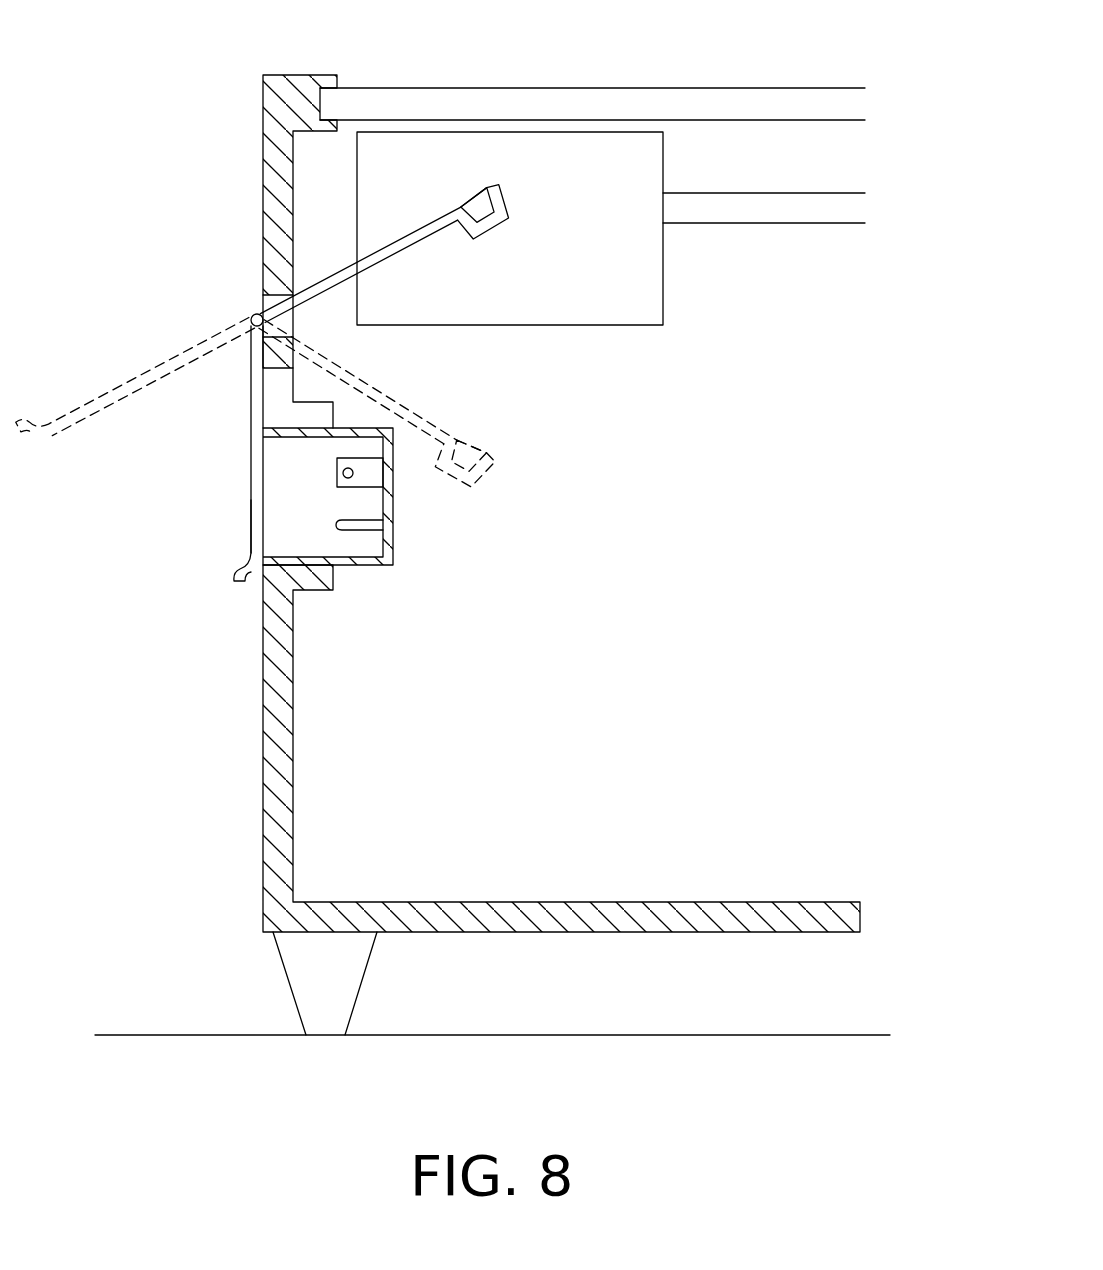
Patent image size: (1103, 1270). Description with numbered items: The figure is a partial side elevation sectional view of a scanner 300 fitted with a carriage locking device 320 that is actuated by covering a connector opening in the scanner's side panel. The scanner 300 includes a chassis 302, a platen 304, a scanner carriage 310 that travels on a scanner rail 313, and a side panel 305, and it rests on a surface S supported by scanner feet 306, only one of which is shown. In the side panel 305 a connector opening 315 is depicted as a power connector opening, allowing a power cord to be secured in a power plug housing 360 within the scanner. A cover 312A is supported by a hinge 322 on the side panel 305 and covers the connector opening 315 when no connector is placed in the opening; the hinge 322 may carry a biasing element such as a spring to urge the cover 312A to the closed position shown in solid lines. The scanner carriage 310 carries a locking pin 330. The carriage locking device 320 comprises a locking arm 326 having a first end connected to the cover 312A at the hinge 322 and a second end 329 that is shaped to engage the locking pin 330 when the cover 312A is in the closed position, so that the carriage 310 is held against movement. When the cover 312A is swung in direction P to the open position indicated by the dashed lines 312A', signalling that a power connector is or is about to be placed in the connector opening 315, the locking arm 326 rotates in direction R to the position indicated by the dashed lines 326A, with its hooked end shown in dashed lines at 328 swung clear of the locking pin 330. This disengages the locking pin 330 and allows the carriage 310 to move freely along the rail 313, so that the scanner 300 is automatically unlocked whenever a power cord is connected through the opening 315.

The scanner 300 is at (628, 45).
The chassis 302 is at (523, 503).
The platen 304 is at (793, 95).
The side panel 305 is at (262, 205).
The scanner feet 306 is at (347, 990).
The scanner carriage 310 is at (650, 268).
The scanner rail 313 is at (770, 196).
The connector opening 315 is at (277, 525).
The cover 312A is at (217, 453).
The cover in open position 312A' is at (135, 374).
The carriage locking device 320 is at (461, 404).
The hinge 322 is at (252, 315).
The locking arm 326 is at (422, 247).
The locking arm in rotated position 326A is at (371, 404).
The hook (rotated position) 328 is at (464, 461).
The second end of locking arm 329 is at (483, 211).
The locking pin 330 is at (479, 207).
The power plug housing 360 is at (390, 522).
The direction of cover movement P is at (155, 550).
The direction of locking arm rotation R is at (503, 263).
The surface S is at (170, 1030).